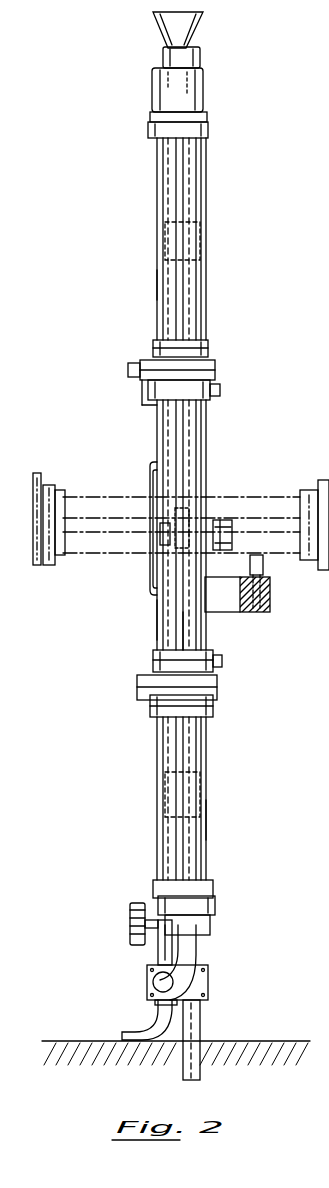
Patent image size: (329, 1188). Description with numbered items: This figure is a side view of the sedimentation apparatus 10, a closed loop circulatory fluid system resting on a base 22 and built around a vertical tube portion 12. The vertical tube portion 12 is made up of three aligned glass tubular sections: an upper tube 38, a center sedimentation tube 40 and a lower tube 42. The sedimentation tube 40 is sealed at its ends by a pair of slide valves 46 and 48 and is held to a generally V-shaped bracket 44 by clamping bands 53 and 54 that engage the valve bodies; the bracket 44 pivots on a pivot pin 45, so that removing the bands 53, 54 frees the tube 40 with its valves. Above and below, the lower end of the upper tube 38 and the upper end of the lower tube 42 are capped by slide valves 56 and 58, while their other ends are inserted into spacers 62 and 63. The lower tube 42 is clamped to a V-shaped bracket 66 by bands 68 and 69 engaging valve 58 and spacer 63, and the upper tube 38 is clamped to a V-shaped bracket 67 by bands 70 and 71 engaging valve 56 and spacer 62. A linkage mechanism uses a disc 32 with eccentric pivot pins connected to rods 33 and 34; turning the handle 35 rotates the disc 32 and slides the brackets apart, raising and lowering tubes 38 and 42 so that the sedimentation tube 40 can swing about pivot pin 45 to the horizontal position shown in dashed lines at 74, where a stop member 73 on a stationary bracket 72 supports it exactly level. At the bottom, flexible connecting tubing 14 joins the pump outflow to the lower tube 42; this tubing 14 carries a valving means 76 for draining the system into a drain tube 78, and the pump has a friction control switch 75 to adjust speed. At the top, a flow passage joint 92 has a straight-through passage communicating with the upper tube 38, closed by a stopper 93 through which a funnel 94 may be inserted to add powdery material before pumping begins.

The sedimentation apparatus 10 is at (127, 325).
The vertical tube portion 12 is at (197, 463).
The connecting tubing 14 is at (198, 940).
The base 22 is at (268, 1043).
The disc 32 is at (156, 540).
The rod 33 is at (150, 573).
The rod 34 is at (150, 482).
The handle 35 is at (222, 551).
The upper tube 38 is at (185, 210).
The center tube 40 is at (195, 622).
The lower tube 42 is at (195, 762).
The V-shaped bracket 44 is at (156, 616).
The pivot pin 45 is at (185, 518).
The slide valve 46 is at (153, 652).
The slide valve 48 is at (212, 394).
The band 53 is at (151, 661).
The band 54 is at (148, 390).
The slide valve 56 is at (202, 340).
The slide valve 58 is at (213, 708).
The spacer 62 is at (207, 116).
The spacer 63 is at (212, 886).
The V-shaped bracket 66 is at (208, 830).
The V-shaped bracket 67 is at (206, 286).
The band 68 is at (216, 900).
The band 69 is at (150, 698).
The band 70 is at (209, 352).
The band 71 is at (208, 130).
The stationary bracket 72 is at (270, 610).
The stop member 73 is at (264, 565).
The rotated position of sedimentation tube 74 is at (270, 490).
The friction control switch 75 is at (324, 915).
The valving means 76 is at (209, 985).
The drain tube 78 is at (142, 1034).
The flow passage joint 92 is at (203, 98).
The stopper 93 is at (200, 58).
The funnel 94 is at (196, 24).